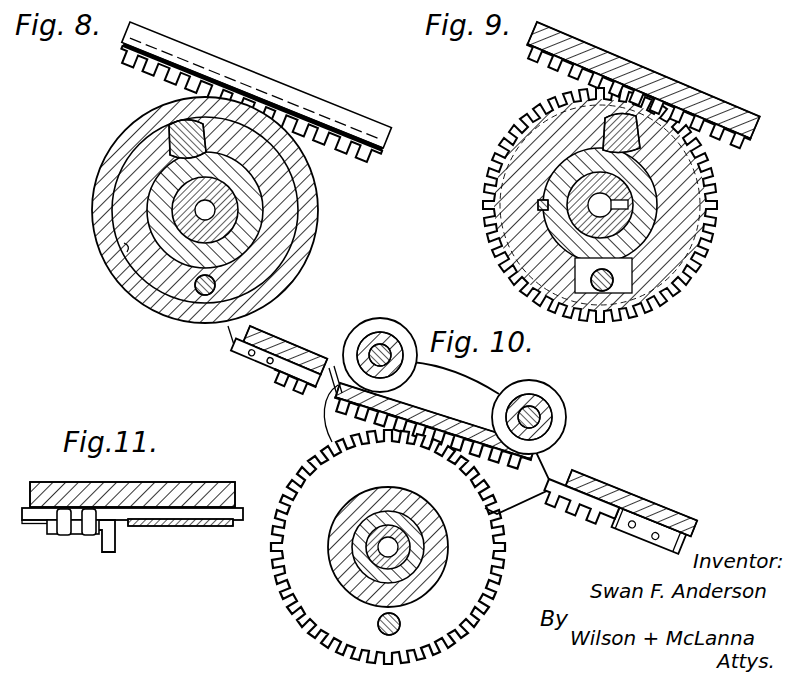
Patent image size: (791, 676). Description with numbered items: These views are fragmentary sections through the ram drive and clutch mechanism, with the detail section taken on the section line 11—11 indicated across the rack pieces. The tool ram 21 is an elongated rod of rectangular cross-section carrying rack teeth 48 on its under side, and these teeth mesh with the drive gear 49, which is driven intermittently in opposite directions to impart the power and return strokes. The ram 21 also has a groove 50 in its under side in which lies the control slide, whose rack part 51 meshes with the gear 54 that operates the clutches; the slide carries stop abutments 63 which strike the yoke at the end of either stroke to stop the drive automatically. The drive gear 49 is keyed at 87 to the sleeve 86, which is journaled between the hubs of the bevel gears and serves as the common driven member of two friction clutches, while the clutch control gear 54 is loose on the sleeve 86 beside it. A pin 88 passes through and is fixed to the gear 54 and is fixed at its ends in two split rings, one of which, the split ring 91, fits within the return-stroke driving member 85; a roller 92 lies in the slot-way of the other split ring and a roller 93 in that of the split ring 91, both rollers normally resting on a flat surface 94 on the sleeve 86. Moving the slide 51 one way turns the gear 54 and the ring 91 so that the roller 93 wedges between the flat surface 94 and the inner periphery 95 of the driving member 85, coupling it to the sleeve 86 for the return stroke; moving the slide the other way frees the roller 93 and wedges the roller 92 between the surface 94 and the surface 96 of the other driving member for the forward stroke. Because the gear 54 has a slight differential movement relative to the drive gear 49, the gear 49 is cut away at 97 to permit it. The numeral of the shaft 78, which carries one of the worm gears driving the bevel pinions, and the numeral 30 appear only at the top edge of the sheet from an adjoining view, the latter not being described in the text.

In FIG. 10, the section line 11— 11 is at (272, 384).
In FIG. 8, the tool ram 21 is at (347, 117).
In FIG. 9, the tool ram 21 is at (622, 60).
In FIG. 10, the tool ram 21 is at (652, 500).
In FIG. 11, the tool ram 21 is at (48, 482).
In FIG. 8, the frame 30 is at (361, 5).
In FIG. 9, the rack teeth 48 is at (535, 55).
In FIG. 9, the drive gear 49 is at (513, 152).
In FIG. 11, the groove 50 is at (185, 505).
In FIG. 8, the rack part of control slide 51 is at (124, 52).
In FIG. 10, the rack part of control slide 51 is at (578, 492).
In FIG. 11, the rack part of control slide 51 is at (158, 522).
In FIG. 10, the clutch control gear 54 is at (467, 574).
In FIG. 10, the stop abutments 63 is at (272, 368).
In FIG. 11, the stop abutments 63 is at (75, 535).
In FIG. 8, the shaft 78 is at (289, 9).
In FIG. 8, the clutch driving member 85 is at (100, 157).
In FIG. 8, the sleeve 86 is at (125, 214).
In FIG. 9, the sleeve 86 is at (560, 233).
In FIG. 10, the sleeve 86 is at (338, 540).
In FIG. 9, the key 87 is at (538, 206).
In FIG. 8, the pin 88 is at (193, 298).
In FIG. 9, the pin 88 is at (606, 291).
In FIG. 10, the pin 88 is at (378, 626).
In FIG. 8, the split ring 91 is at (125, 252).
In FIG. 9, the roller 92 is at (714, 152).
In FIG. 8, the roller 93 is at (140, 136).
In FIG. 8, the flat surface 94 is at (170, 172).
In FIG. 9, the flat surface 94 is at (703, 187).
In FIG. 10, the flat surface 94 is at (393, 490).
In FIG. 8, the inner periphery 95 is at (170, 122).
In FIG. 9, the inner clutch surface 96 is at (647, 103).
In FIG. 9, the cut-away 97 is at (643, 303).